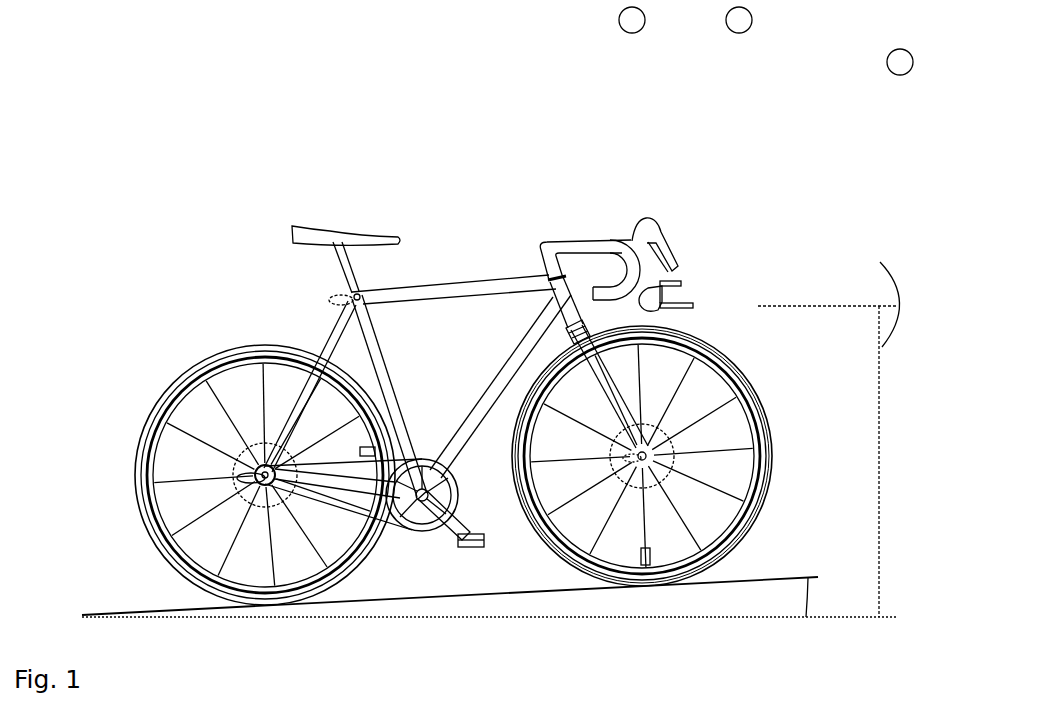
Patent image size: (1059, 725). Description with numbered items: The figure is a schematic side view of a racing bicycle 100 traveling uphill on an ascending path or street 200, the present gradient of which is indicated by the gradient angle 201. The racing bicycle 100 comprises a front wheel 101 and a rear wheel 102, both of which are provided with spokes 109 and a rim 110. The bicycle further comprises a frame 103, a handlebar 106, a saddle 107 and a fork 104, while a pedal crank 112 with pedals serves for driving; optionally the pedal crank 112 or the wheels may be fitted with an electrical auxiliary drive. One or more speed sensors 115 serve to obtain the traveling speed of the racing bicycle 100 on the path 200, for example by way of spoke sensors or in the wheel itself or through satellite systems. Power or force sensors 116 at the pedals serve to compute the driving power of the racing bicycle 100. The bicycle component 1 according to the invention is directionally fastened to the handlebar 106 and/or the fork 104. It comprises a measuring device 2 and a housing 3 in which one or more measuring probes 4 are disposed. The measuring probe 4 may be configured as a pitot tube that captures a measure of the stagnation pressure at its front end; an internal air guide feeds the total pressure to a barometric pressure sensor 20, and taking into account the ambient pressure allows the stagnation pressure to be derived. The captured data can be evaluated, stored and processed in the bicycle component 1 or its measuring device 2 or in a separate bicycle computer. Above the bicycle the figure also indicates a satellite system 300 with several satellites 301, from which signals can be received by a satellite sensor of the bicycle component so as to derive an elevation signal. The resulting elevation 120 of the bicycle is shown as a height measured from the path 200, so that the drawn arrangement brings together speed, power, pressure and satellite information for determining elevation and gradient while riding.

The racing bicycle 100 is at (168, 272).
The front wheel 101 is at (765, 412).
The rear wheel 102 is at (167, 405).
The frame 103 is at (463, 290).
The fork 104 is at (597, 372).
The handlebar 106 is at (587, 248).
The saddle 107 is at (327, 240).
The spoke 109 is at (737, 452).
The rim 110 is at (748, 490).
The pedal crank 112 is at (433, 440).
The speed sensor 115 is at (652, 556).
The power sensor 116 is at (471, 534).
The elevation 120 is at (829, 431).
The path 200 is at (468, 597).
The gradient angle 201 is at (809, 599).
The satellite system 300 is at (733, 90).
The satellite 301 is at (645, 20).
The bicycle component 1 is at (717, 263).
The measuring device 2 is at (706, 283).
The housing 3 is at (662, 310).
The measuring probe 4 is at (703, 306).
The barometric pressure sensor 20 is at (707, 298).